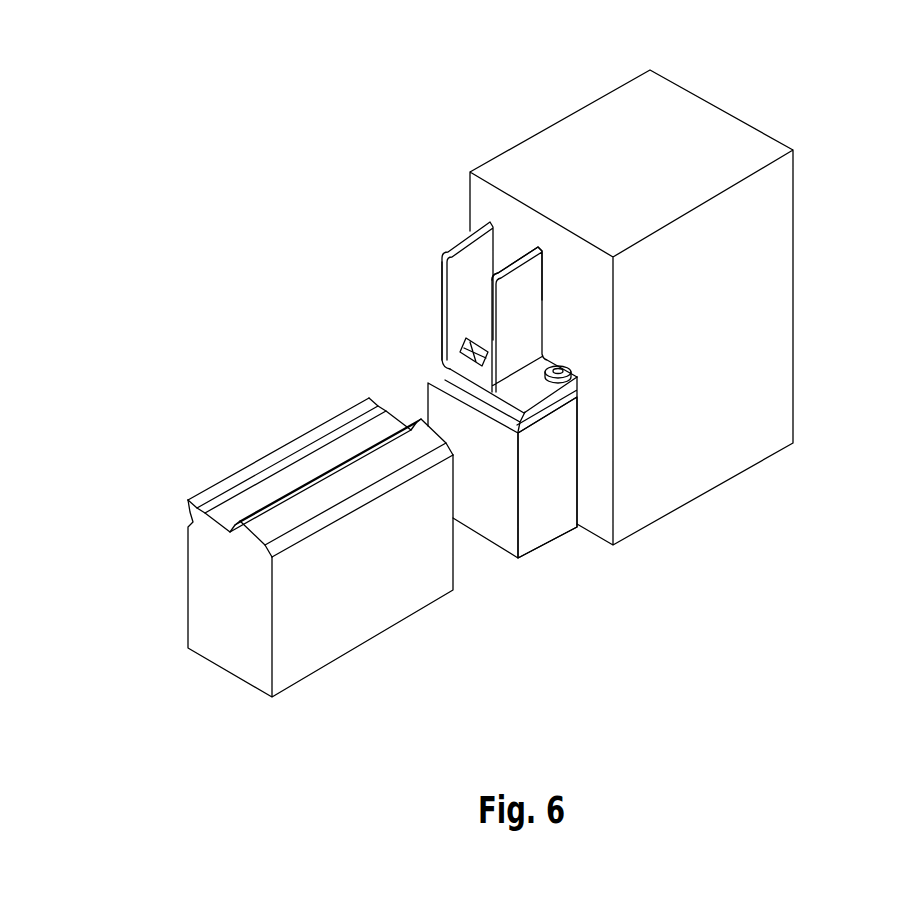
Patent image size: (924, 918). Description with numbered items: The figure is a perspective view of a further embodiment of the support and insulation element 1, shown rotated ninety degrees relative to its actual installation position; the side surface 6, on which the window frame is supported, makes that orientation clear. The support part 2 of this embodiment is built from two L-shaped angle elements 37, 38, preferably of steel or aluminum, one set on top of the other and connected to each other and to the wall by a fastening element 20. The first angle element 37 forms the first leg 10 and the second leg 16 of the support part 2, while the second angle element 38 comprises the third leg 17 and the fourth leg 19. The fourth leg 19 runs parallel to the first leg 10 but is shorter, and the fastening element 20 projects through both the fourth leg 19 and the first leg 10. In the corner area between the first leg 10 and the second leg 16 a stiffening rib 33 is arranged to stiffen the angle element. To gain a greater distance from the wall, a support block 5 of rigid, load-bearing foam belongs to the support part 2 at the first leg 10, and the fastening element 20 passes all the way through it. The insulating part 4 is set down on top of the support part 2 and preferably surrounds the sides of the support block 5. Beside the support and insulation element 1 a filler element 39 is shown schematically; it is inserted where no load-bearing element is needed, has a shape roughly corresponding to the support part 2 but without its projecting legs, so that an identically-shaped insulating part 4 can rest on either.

The support and insulation element 1 is at (380, 76).
The support part 2 is at (552, 546).
The insulating part 4 is at (738, 296).
The support block 5 is at (487, 492).
The side surface 6 is at (494, 321).
The first leg 10 is at (445, 380).
The second leg 16 is at (443, 314).
The third leg 17 is at (554, 278).
The fourth leg 19 is at (532, 398).
The fastening element 20 is at (570, 375).
The stiffening rib 33 is at (463, 350).
The first angle element 37 is at (320, 285).
The second angle element 38 is at (518, 279).
The filler element 39 is at (222, 604).